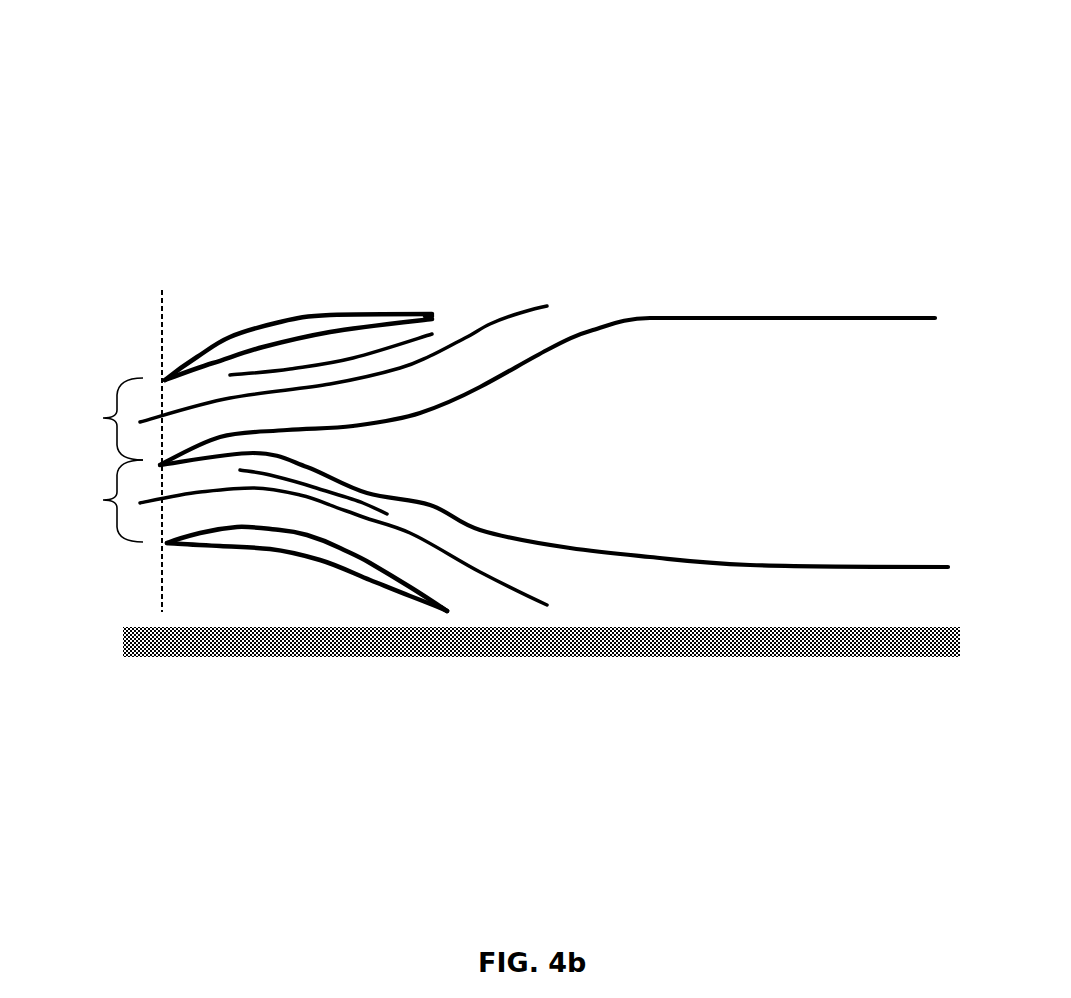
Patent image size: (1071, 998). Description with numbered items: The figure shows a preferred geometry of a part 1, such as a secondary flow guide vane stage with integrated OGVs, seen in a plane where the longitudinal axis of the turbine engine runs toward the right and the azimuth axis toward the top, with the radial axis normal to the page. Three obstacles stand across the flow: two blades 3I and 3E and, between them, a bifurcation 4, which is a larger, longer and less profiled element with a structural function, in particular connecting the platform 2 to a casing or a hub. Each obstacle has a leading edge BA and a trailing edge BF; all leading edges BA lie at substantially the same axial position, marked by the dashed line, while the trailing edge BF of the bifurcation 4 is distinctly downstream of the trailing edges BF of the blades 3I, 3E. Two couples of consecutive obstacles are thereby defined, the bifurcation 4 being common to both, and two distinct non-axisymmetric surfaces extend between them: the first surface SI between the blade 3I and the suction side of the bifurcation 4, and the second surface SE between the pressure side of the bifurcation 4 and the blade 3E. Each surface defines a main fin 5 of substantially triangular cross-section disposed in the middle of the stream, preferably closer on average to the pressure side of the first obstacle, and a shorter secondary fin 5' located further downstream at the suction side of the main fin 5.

The part 1 is at (142, 81).
The platform 2 is at (89, 598).
The leading edge BA is at (158, 474).
The blade 3I is at (286, 302).
The blade 3E is at (300, 573).
The bifurcation 4 is at (691, 304).
The trailing edge BF is at (420, 291).
The main fin 5 is at (343, 455).
The secondary fin 5' is at (443, 424).
The first surface SI is at (103, 418).
The second surface SE is at (103, 500).